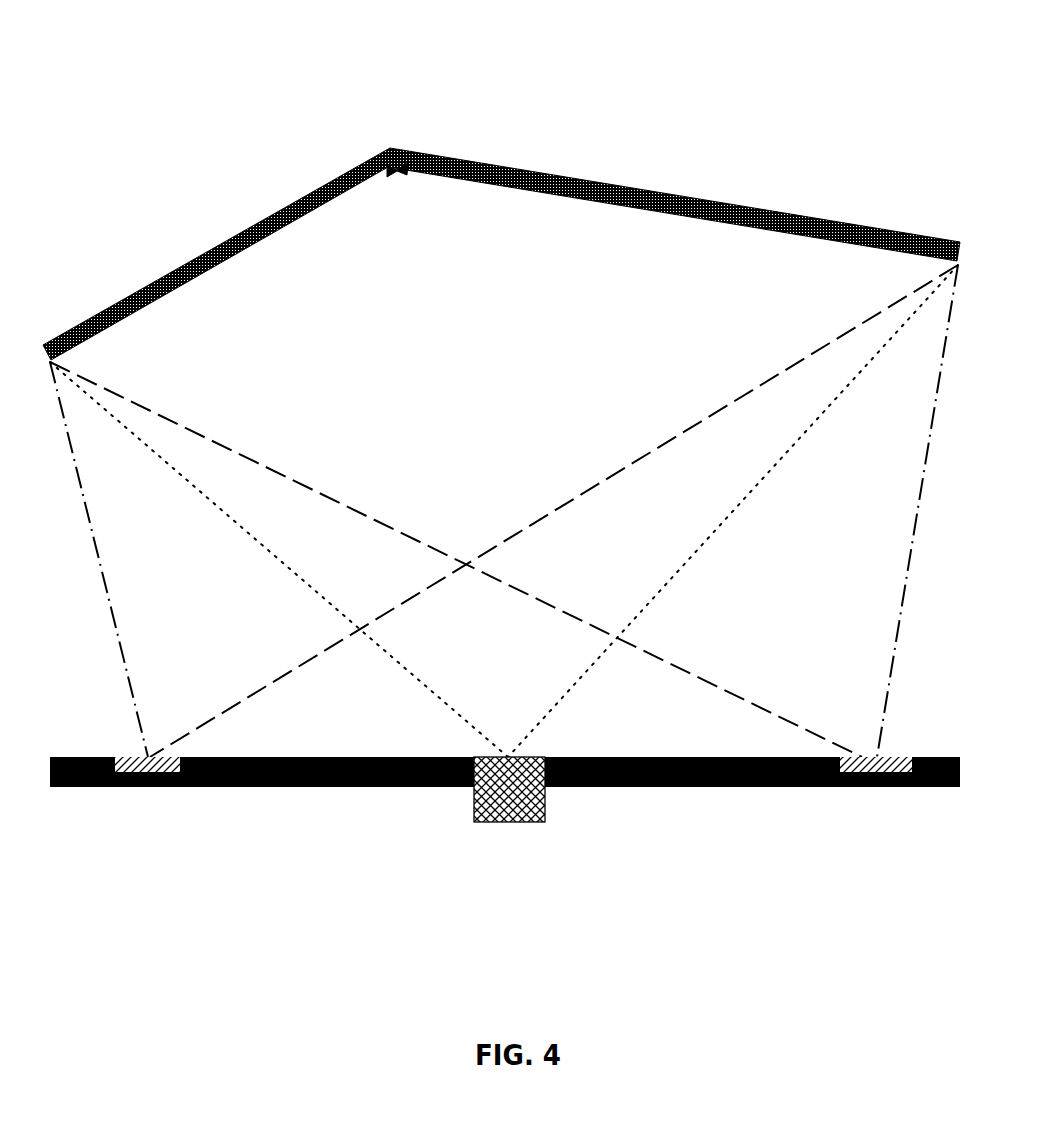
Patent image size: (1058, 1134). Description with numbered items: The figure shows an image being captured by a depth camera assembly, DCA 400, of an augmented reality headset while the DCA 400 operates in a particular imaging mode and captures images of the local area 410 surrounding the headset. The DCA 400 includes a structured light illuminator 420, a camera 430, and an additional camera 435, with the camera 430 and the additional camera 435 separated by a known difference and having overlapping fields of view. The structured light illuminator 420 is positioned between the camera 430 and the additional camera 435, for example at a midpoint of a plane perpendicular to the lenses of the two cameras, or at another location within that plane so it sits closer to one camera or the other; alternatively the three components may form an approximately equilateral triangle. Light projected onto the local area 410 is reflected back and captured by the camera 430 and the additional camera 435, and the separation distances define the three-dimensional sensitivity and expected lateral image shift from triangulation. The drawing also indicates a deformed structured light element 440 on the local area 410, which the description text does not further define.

The depth camera assembly 400 is at (690, 790).
The local area 410 is at (697, 192).
The structured light illuminator 420 is at (509, 828).
The camera 430 is at (174, 755).
The additional camera 435 is at (859, 750).
The deformed structured light element 440 is at (406, 152).